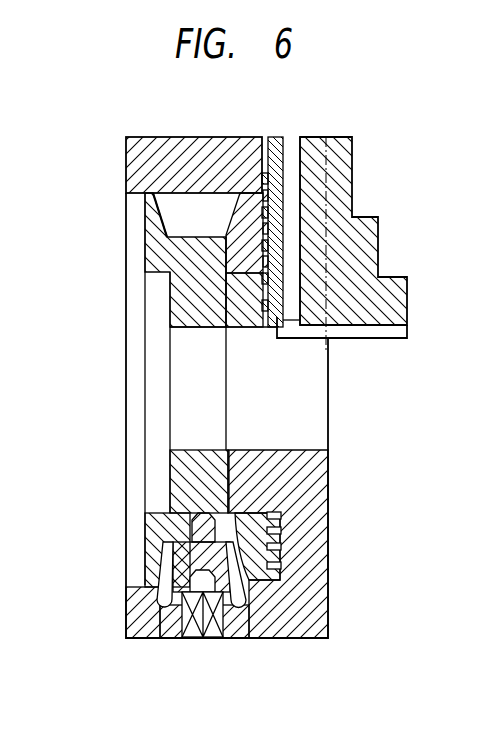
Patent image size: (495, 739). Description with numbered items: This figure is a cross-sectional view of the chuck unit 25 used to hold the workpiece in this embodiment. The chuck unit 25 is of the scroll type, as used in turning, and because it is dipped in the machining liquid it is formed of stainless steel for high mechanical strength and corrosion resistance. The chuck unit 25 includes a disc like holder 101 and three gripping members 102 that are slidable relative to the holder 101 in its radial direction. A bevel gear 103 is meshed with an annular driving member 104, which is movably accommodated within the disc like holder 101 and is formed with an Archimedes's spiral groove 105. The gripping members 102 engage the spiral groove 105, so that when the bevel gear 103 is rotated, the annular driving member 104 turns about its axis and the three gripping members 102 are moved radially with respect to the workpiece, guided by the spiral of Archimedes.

The chuck unit 25 is at (354, 131).
The disc like holder 101 is at (318, 604).
The gripping member 102 is at (363, 253).
The bevel gear 103 is at (176, 632).
The annular driving member 104 is at (228, 237).
The Archimedes's spiral groove 105 is at (281, 527).